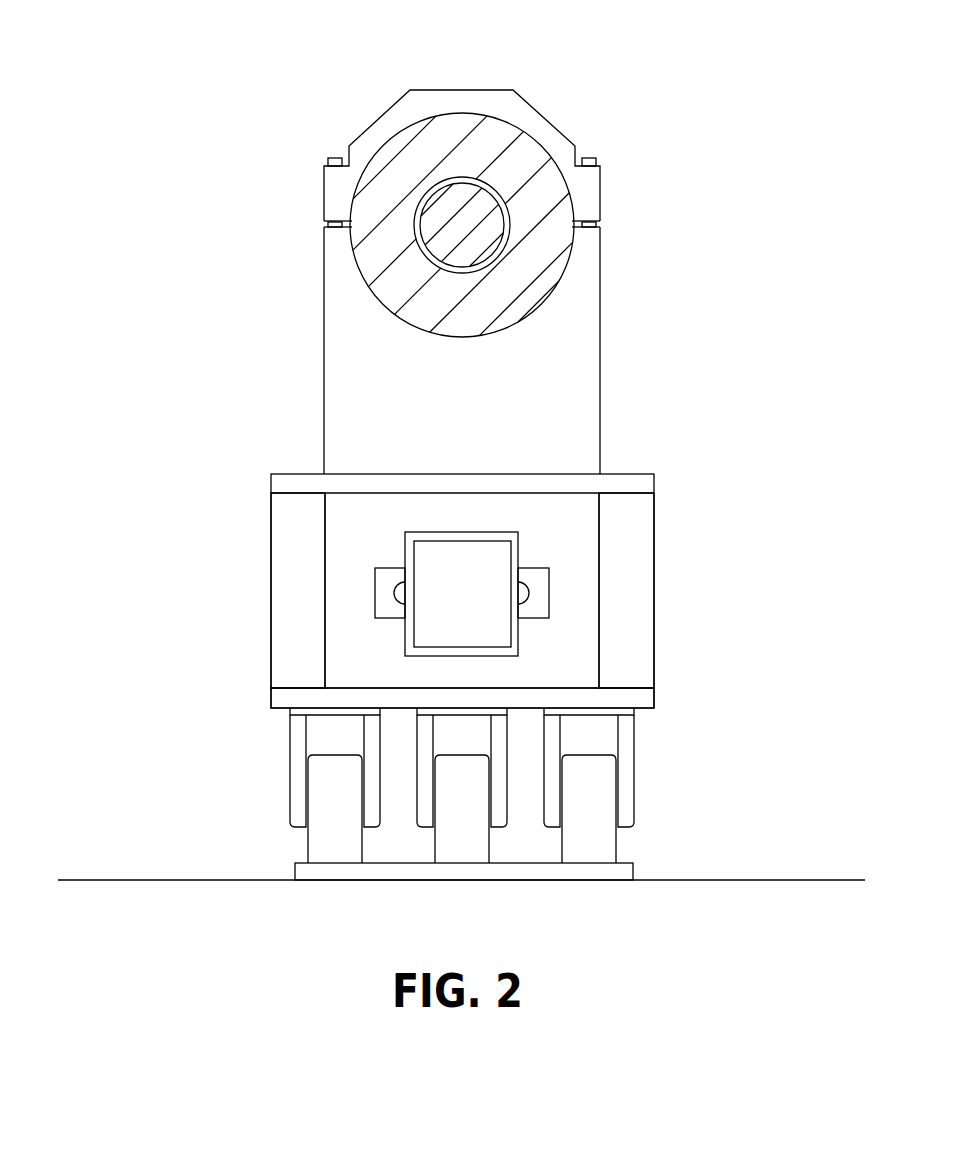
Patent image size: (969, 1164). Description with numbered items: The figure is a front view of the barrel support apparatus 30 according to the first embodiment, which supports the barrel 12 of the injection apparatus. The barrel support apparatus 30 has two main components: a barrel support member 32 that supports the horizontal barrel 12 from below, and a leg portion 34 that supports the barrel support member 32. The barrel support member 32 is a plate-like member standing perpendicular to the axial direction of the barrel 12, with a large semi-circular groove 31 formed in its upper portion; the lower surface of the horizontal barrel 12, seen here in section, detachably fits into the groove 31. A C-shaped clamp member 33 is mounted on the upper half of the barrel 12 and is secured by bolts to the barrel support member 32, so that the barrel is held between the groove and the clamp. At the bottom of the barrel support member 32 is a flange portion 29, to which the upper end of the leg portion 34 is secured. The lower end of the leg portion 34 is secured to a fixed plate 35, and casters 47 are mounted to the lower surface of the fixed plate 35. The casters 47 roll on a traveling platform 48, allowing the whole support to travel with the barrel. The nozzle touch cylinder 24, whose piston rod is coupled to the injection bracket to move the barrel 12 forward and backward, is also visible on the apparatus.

The barrel 12 is at (388, 143).
The nozzle touch cylinder 24 is at (520, 555).
The flange portion 29 is at (567, 480).
The barrel support apparatus 30 is at (748, 112).
The semi-circular groove 31 is at (398, 313).
The barrel support member 32 is at (578, 322).
The clamp member 33 is at (461, 107).
The leg portion 34 is at (283, 618).
The fixed plate 35 is at (398, 700).
The casters 47 is at (598, 788).
The traveling platform 48 is at (293, 872).